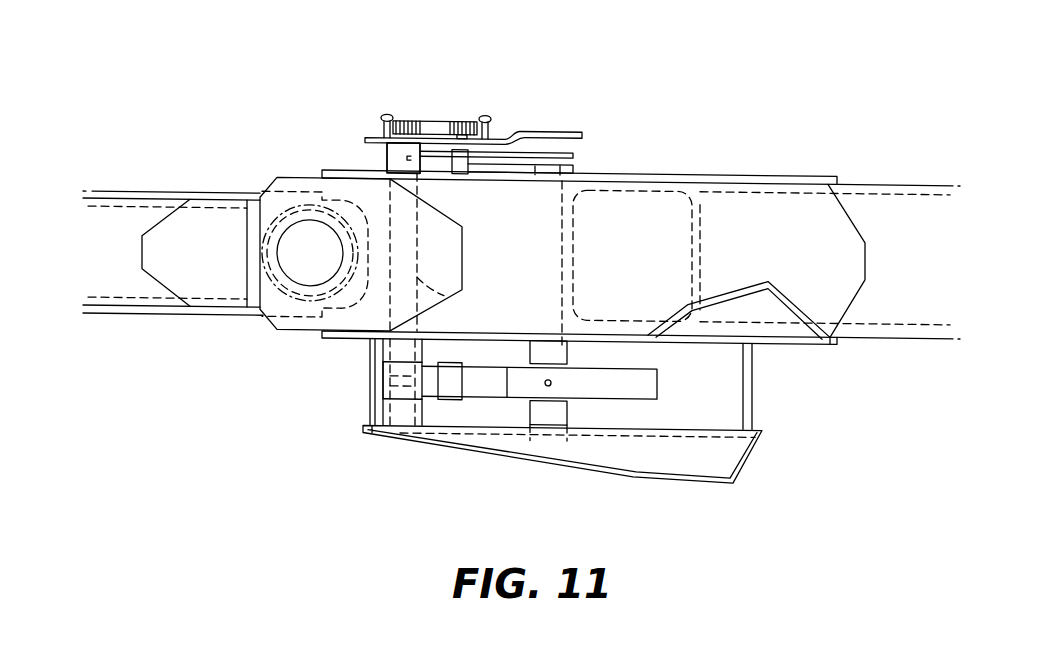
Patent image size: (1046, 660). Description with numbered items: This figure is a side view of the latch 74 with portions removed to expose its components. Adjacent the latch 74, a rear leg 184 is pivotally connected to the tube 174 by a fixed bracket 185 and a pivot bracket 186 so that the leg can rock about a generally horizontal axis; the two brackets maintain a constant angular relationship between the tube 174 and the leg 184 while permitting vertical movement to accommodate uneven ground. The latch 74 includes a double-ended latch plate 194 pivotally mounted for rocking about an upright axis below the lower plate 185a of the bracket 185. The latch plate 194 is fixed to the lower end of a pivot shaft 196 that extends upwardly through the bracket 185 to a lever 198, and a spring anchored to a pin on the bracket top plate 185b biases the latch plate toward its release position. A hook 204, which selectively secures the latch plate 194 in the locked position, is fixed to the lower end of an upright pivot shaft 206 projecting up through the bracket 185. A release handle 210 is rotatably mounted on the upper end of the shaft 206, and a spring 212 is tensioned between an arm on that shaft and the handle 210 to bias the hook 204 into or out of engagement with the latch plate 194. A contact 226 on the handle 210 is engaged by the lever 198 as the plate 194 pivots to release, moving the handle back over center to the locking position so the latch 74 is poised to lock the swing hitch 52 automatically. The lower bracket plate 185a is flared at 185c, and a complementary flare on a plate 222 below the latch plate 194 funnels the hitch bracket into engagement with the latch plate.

The swing hitch 52 is at (273, 184).
The latch 74 is at (738, 112).
The tube 174 is at (890, 191).
The rear leg 184 is at (103, 219).
The fixed bracket 185 is at (780, 170).
The lower plate 185a is at (344, 334).
The bracket top plate 185b is at (632, 172).
The flare 185c is at (773, 300).
The pivot bracket 186 is at (296, 178).
The latch plate 194 is at (516, 390).
The pivot shaft 196 is at (548, 253).
The lever 198 is at (523, 147).
The hook 204 is at (420, 430).
The pivot shaft 206 is at (447, 294).
The release handle 210 is at (483, 115).
The spring 212 is at (444, 116).
The plate 222 is at (735, 451).
The contact 226 is at (459, 168).